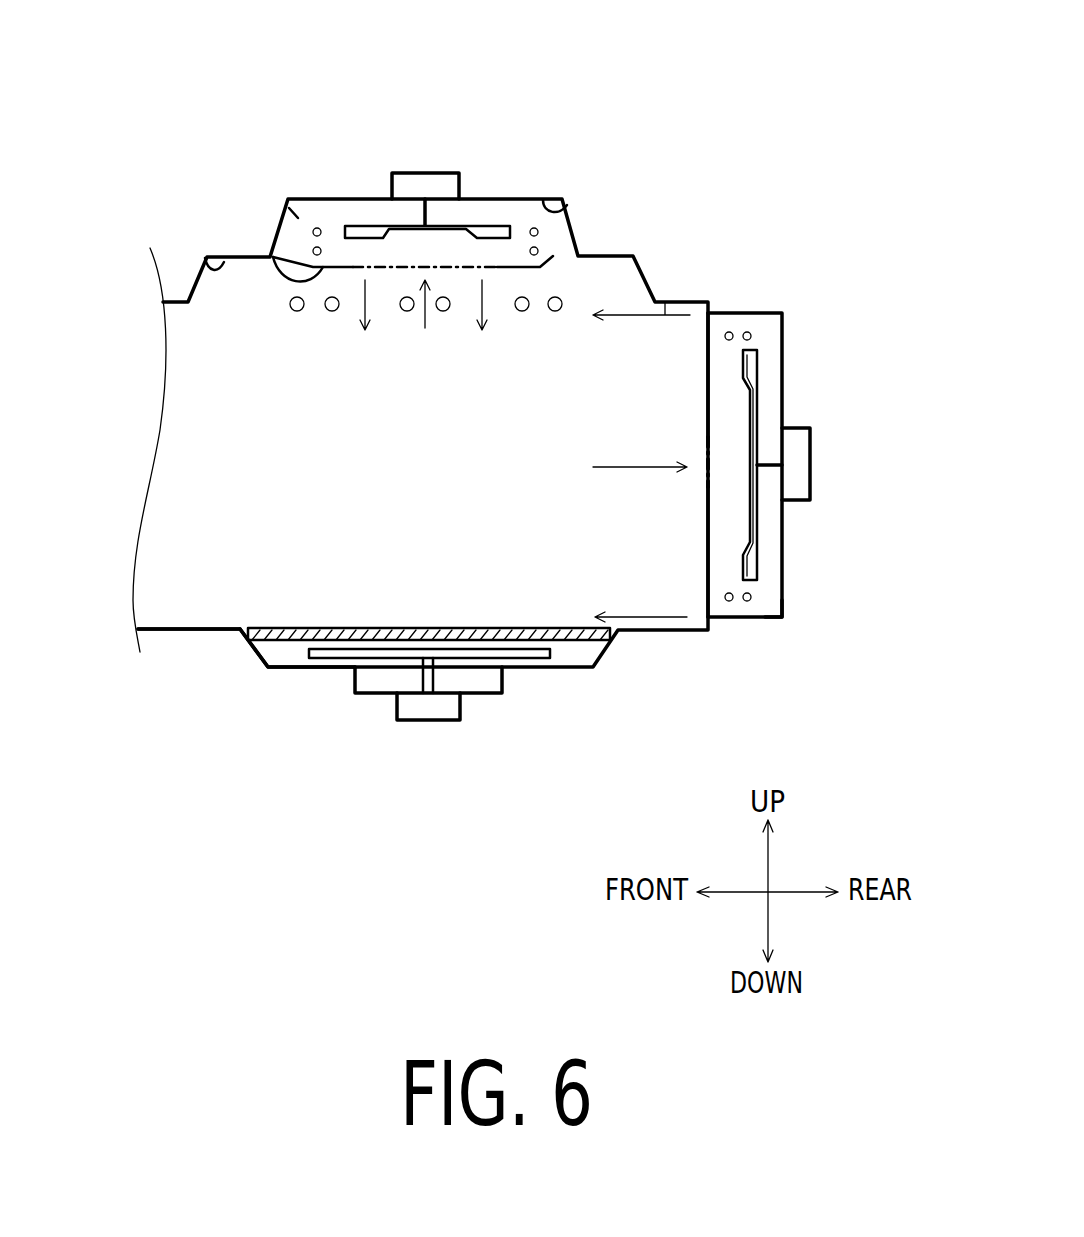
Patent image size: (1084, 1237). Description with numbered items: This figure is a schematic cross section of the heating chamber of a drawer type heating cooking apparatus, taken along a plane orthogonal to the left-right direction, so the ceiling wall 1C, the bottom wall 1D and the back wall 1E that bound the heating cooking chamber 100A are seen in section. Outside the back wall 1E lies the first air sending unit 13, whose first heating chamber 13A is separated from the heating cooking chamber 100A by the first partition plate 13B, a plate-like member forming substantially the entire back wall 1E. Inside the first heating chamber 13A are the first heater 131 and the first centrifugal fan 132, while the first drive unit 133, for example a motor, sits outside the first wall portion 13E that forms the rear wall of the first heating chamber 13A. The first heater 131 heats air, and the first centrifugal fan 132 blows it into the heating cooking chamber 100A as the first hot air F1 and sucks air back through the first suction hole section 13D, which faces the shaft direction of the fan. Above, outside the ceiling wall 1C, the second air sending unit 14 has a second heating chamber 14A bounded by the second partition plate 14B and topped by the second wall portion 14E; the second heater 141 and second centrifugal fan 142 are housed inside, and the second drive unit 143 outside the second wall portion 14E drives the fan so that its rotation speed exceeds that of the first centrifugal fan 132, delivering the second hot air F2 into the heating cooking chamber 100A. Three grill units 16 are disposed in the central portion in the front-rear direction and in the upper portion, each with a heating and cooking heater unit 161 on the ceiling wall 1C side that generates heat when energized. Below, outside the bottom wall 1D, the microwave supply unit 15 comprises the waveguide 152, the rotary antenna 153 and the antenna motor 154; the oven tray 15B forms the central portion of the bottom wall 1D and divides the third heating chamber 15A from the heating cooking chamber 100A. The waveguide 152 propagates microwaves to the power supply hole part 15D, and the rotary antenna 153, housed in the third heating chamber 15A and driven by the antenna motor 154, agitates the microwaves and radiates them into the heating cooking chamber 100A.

The heating cooking chamber 100A is at (175, 455).
The ceiling wall 1C is at (200, 268).
The bottom wall 1D is at (180, 627).
The back wall 1E is at (806, 413).
The second air sending unit 14 is at (512, 62).
The second heater 141 is at (317, 227).
The second centrifugal fan 142 is at (365, 224).
The second drive unit 143 is at (427, 186).
The second heating chamber 14A is at (285, 205).
The second partition plate 14B is at (268, 262).
The second wall portion 14E is at (553, 201).
The grill unit 16 is at (399, 384).
The heating and cooking heater unit 161 is at (332, 311).
The first hot air F1 is at (666, 312).
The second hot air F2 is at (365, 332).
The first air sending unit 13 is at (882, 353).
The first heating chamber 13A is at (772, 325).
The first partition plate 13B is at (708, 372).
The first suction hole section 13D is at (692, 481).
The first wall portion 13E is at (773, 607).
The first heater 131 is at (752, 337).
The first centrifugal fan 132 is at (758, 410).
The first drive unit 133 is at (796, 456).
The microwave supply unit 15 is at (568, 795).
The third heating chamber 15A is at (268, 668).
The oven tray 15B is at (270, 632).
The power supply hole part 15D is at (415, 668).
The waveguide 152 is at (485, 684).
The rotary antenna 153 is at (540, 660).
The antenna motor 154 is at (432, 712).